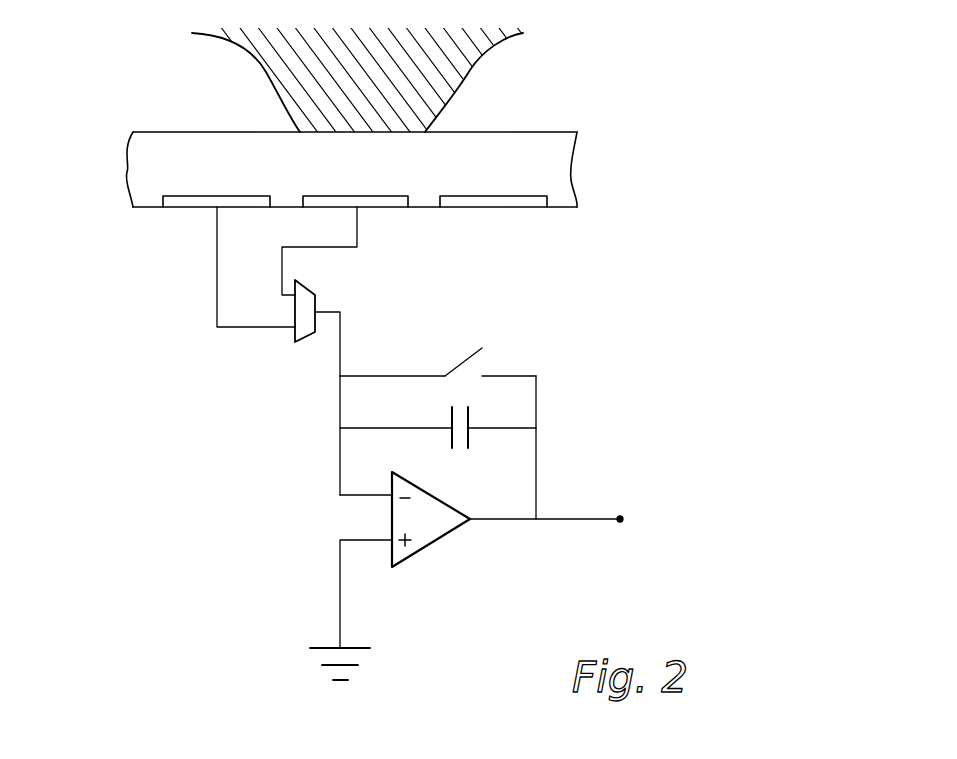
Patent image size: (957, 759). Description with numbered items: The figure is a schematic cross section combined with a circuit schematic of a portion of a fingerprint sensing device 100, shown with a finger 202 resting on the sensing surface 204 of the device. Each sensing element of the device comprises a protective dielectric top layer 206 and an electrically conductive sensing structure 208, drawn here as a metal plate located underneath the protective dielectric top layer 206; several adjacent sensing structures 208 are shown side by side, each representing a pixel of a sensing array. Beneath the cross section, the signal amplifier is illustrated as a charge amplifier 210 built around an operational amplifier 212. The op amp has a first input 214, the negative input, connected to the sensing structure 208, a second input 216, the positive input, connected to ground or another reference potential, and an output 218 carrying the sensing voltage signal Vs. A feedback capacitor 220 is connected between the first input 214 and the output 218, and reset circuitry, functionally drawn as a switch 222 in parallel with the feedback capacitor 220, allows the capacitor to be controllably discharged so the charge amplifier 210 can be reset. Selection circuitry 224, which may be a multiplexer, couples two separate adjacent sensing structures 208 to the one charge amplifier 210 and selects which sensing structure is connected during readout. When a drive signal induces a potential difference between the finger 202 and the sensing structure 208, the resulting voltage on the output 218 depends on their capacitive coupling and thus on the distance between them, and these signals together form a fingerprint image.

The fingerprint sensing device 100 is at (610, 78).
The finger 202 is at (437, 67).
The sensing surface 204 is at (187, 132).
The protective dielectric top layer 206 is at (148, 177).
The sensing structure 208 is at (178, 202).
The charge amplifier 210 is at (313, 518).
The operational amplifier 212 is at (433, 547).
The first input 214 is at (340, 493).
The second input 216 is at (340, 540).
The output 218 is at (475, 523).
The feedback capacitor 220 is at (482, 410).
The switch 222 is at (460, 360).
The selection circuitry 224 is at (303, 332).